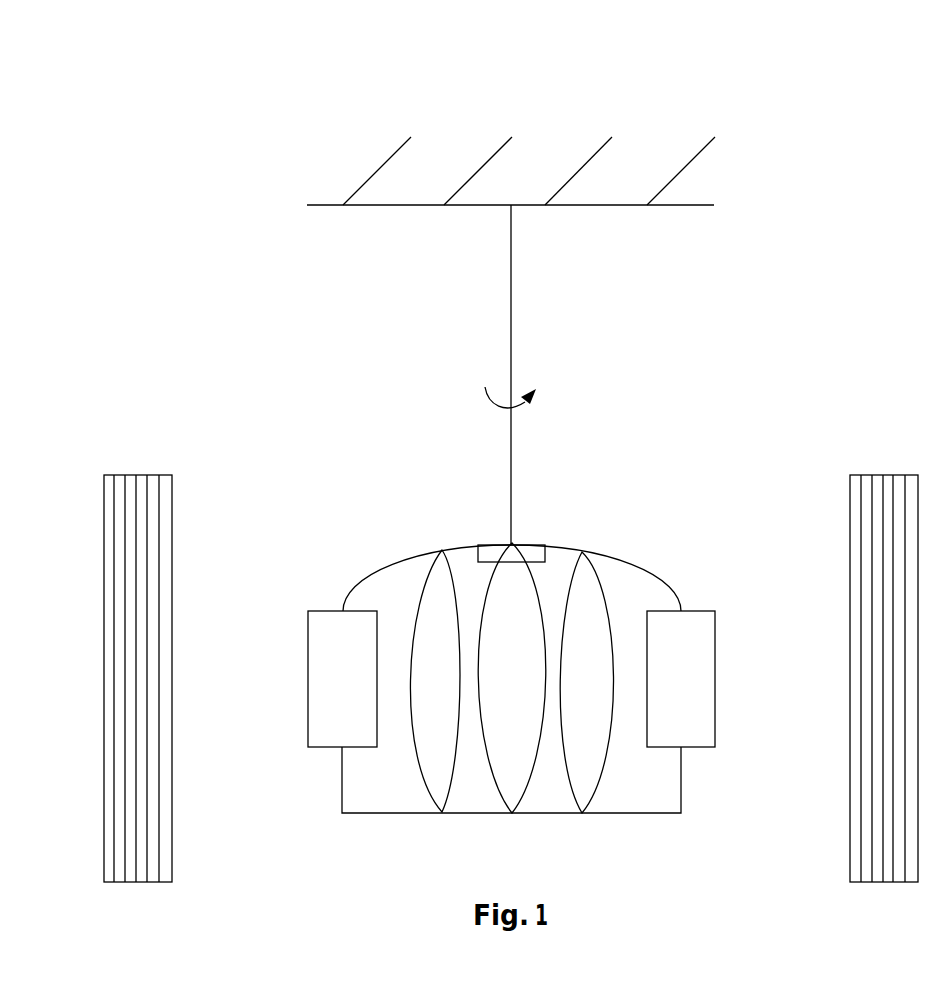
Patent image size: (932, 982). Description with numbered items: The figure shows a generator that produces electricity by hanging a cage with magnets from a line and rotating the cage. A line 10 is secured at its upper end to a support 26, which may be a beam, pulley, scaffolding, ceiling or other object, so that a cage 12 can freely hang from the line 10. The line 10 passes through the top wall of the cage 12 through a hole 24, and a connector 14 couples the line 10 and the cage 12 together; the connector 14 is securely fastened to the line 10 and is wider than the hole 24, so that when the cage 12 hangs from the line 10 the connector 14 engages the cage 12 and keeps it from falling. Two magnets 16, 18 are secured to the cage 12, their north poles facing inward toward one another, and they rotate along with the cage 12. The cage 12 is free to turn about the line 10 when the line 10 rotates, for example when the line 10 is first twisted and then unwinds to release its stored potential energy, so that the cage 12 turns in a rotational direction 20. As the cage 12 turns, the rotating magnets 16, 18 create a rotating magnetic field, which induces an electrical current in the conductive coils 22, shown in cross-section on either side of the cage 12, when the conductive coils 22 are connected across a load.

The line 10 is at (511, 270).
The cage 12 is at (612, 556).
The connector 14 is at (527, 545).
The magnet 16 is at (314, 611).
The magnet 18 is at (694, 611).
The rotational direction 20 is at (527, 385).
The conductive coils 22 is at (137, 475).
The hole 24 is at (500, 545).
The support 26 is at (695, 139).